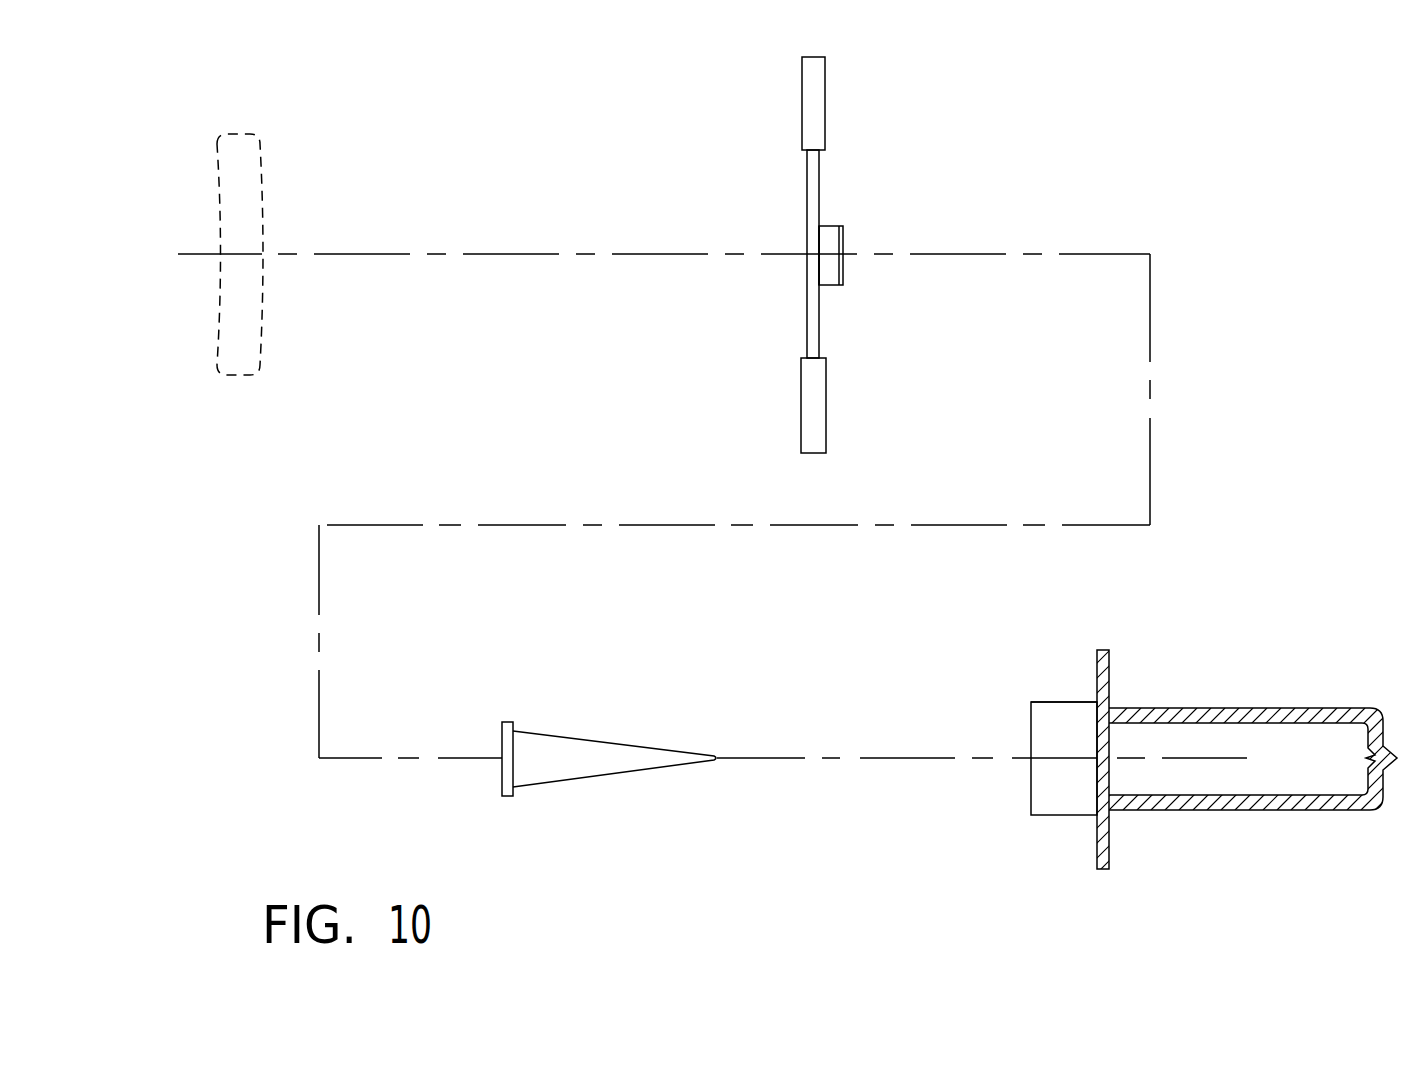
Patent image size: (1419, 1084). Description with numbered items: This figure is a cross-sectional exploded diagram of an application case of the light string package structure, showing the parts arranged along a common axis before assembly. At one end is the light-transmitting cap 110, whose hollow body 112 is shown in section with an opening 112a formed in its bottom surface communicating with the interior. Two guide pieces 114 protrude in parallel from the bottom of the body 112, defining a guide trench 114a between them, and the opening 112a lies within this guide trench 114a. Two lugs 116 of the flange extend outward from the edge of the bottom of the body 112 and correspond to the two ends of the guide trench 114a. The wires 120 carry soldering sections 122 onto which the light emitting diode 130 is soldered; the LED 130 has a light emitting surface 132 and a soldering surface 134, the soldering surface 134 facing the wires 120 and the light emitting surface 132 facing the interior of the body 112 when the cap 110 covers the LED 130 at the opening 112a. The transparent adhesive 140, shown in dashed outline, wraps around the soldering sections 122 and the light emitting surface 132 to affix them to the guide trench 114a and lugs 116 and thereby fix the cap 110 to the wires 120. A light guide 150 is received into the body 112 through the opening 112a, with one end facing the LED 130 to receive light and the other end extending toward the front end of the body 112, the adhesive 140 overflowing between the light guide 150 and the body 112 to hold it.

The light-transmitting cap 110 is at (1168, 723).
The body 112 is at (1243, 710).
The opening 112a is at (1097, 793).
The guide pieces 114 is at (1031, 727).
The guide trench 114a is at (1052, 700).
The lugs 116 is at (1109, 664).
The wires 120 is at (807, 111).
The soldering sections 122 is at (815, 160).
The light emitting diode 130 is at (825, 278).
The light emitting surface 132 is at (846, 241).
The soldering surface 134 is at (817, 243).
The transparent adhesive 140 is at (217, 317).
The light guide 150 is at (580, 750).